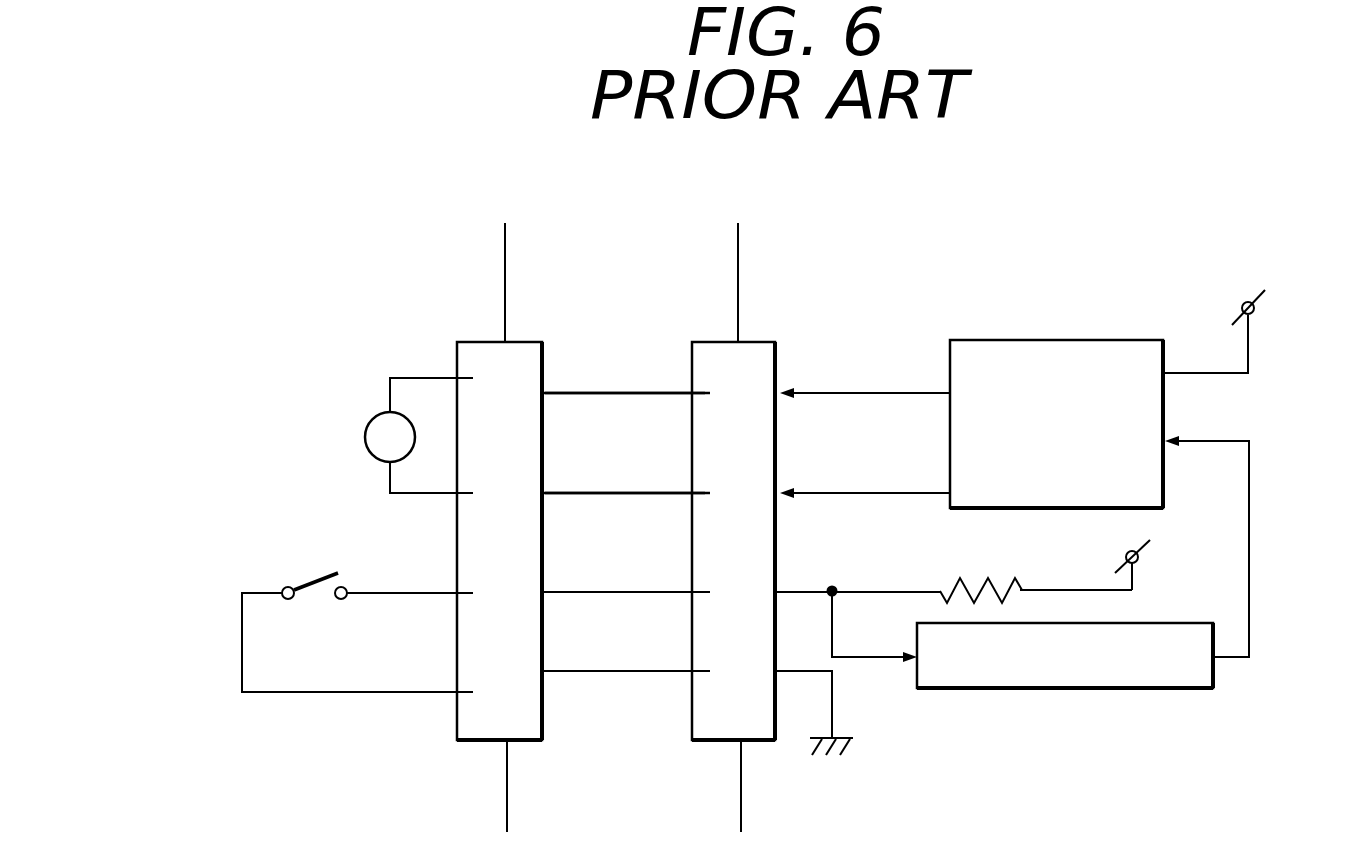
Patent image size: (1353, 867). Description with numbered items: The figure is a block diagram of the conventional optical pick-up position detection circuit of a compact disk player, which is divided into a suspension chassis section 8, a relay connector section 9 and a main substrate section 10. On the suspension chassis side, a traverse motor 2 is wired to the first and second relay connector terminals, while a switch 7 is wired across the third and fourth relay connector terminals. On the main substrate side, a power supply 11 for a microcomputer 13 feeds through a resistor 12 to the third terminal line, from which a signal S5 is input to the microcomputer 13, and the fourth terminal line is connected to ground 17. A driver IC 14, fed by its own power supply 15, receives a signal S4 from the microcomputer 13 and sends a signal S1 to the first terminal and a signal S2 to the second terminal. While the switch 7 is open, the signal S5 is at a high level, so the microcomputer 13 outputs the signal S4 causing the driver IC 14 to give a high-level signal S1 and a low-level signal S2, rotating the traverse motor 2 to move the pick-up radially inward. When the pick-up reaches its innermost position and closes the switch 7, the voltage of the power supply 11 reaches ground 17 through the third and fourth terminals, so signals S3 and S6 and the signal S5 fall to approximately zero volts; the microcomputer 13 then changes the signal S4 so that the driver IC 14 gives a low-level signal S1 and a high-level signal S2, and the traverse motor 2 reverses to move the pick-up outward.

The traverse motor 2 is at (373, 421).
The switch 7 is at (310, 564).
The suspension chassis section 8 is at (424, 506).
The relay connector section 9 is at (621, 425).
The main substrate section 10 is at (811, 506).
The power supply 11 is at (1129, 554).
The resistor 12 is at (975, 578).
The microcomputer 13 is at (1120, 692).
The driver IC 14 is at (1062, 340).
The power supply 15 is at (1235, 315).
The ground 17 is at (852, 730).
The signal S1 is at (590, 406).
The signal S2 is at (590, 506).
The signal S3 is at (590, 605).
The signal S4 is at (1262, 493).
The signal S5 is at (848, 612).
The signal S6 is at (590, 685).